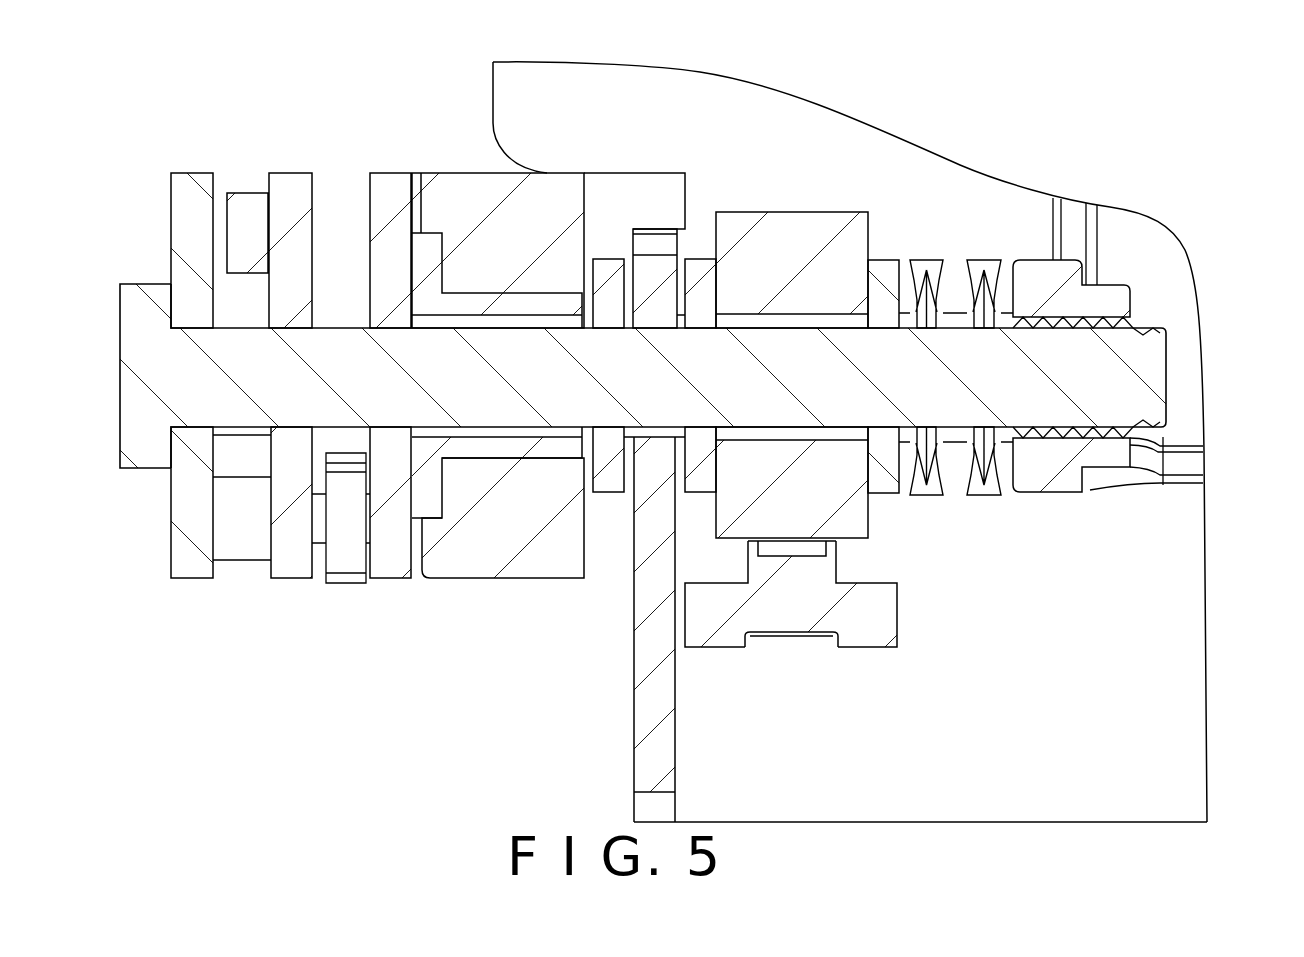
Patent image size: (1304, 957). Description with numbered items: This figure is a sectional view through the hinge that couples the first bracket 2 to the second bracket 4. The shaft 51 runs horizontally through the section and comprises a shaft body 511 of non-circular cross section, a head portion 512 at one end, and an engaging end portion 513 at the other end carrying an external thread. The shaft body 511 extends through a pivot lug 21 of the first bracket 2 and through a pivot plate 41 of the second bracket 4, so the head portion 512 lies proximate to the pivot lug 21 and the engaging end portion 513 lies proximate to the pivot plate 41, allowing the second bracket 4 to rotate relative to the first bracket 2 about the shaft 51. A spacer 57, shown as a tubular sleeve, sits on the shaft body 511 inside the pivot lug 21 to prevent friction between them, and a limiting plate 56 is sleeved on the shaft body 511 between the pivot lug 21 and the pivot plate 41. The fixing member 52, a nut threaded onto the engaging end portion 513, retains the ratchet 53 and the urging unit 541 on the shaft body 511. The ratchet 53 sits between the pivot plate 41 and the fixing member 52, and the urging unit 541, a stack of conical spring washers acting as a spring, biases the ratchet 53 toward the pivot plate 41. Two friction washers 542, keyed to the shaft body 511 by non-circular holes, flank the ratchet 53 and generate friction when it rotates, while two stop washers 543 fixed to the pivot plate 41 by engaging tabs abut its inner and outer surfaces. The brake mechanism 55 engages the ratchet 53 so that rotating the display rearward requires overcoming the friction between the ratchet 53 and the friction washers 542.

The first bracket 2 is at (441, 158).
The pivot lug 21 is at (480, 195).
The second bracket 4 is at (693, 747).
The pivot plate 41 is at (652, 653).
The shaft 51 is at (400, 408).
The shaft body 511 is at (305, 390).
The head portion 512 is at (152, 410).
The engaging end portion 513 is at (1113, 387).
The fixing member 52 is at (1052, 487).
The ratchet 53 is at (783, 237).
The urging unit 541 is at (940, 262).
The friction washer 542 is at (700, 262).
The stop washer 543 is at (683, 477).
The brake mechanism 55 is at (862, 662).
The limiting plate 56 is at (611, 272).
The spacer 57 is at (427, 250).